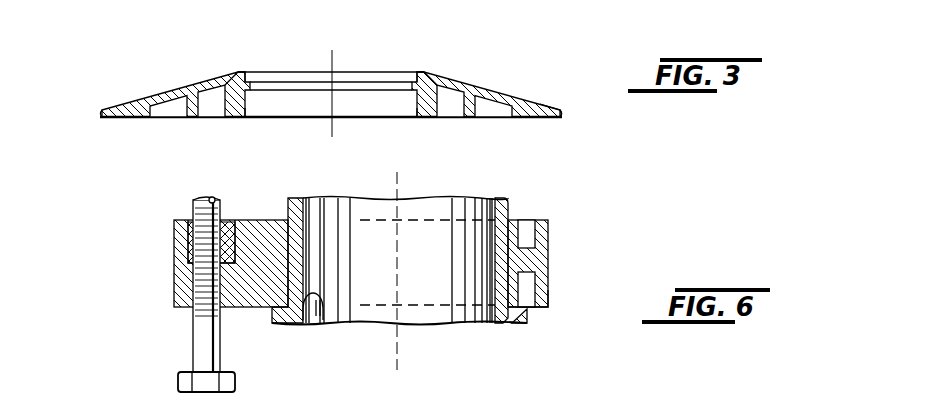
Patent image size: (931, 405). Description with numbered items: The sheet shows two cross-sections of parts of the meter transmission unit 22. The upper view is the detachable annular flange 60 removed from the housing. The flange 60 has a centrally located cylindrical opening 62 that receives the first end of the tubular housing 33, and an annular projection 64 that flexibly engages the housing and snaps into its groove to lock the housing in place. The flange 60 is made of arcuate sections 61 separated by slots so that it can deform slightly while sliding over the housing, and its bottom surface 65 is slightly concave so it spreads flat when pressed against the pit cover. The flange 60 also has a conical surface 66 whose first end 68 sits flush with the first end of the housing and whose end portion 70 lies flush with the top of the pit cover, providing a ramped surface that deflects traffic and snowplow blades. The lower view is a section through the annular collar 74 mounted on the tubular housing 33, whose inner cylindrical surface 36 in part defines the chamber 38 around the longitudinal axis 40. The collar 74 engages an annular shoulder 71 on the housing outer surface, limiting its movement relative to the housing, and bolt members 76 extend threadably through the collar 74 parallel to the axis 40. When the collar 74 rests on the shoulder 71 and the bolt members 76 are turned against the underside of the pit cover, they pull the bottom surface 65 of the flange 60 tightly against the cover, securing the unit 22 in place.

In FIG. 3, the detachable annular flange 60 is at (352, 83).
In FIG. 3, the arcuate sections 61 is at (446, 74).
In FIG. 3, the cylindrical opening 62 is at (247, 110).
In FIG. 3, the annular projection 64 is at (250, 73).
In FIG. 3, the bottom surface 65 is at (446, 118).
In FIG. 3, the conical surface 66 is at (235, 78).
In FIG. 3, the first end 68 is at (424, 72).
In FIG. 3, the end portion 70 is at (558, 106).
In FIG. 6, the meter transmission unit 22 is at (540, 308).
In FIG. 6, the tubular housing 33 is at (510, 199).
In FIG. 6, the inner cylindrical surface 36 is at (318, 322).
In FIG. 6, the chamber 38 is at (438, 316).
In FIG. 6, the longitudinal axis 40 is at (392, 344).
In FIG. 6, the annular shoulder 71 is at (528, 322).
In FIG. 6, the annular collar 74 is at (550, 236).
In FIG. 6, the bolt members 76 is at (180, 380).